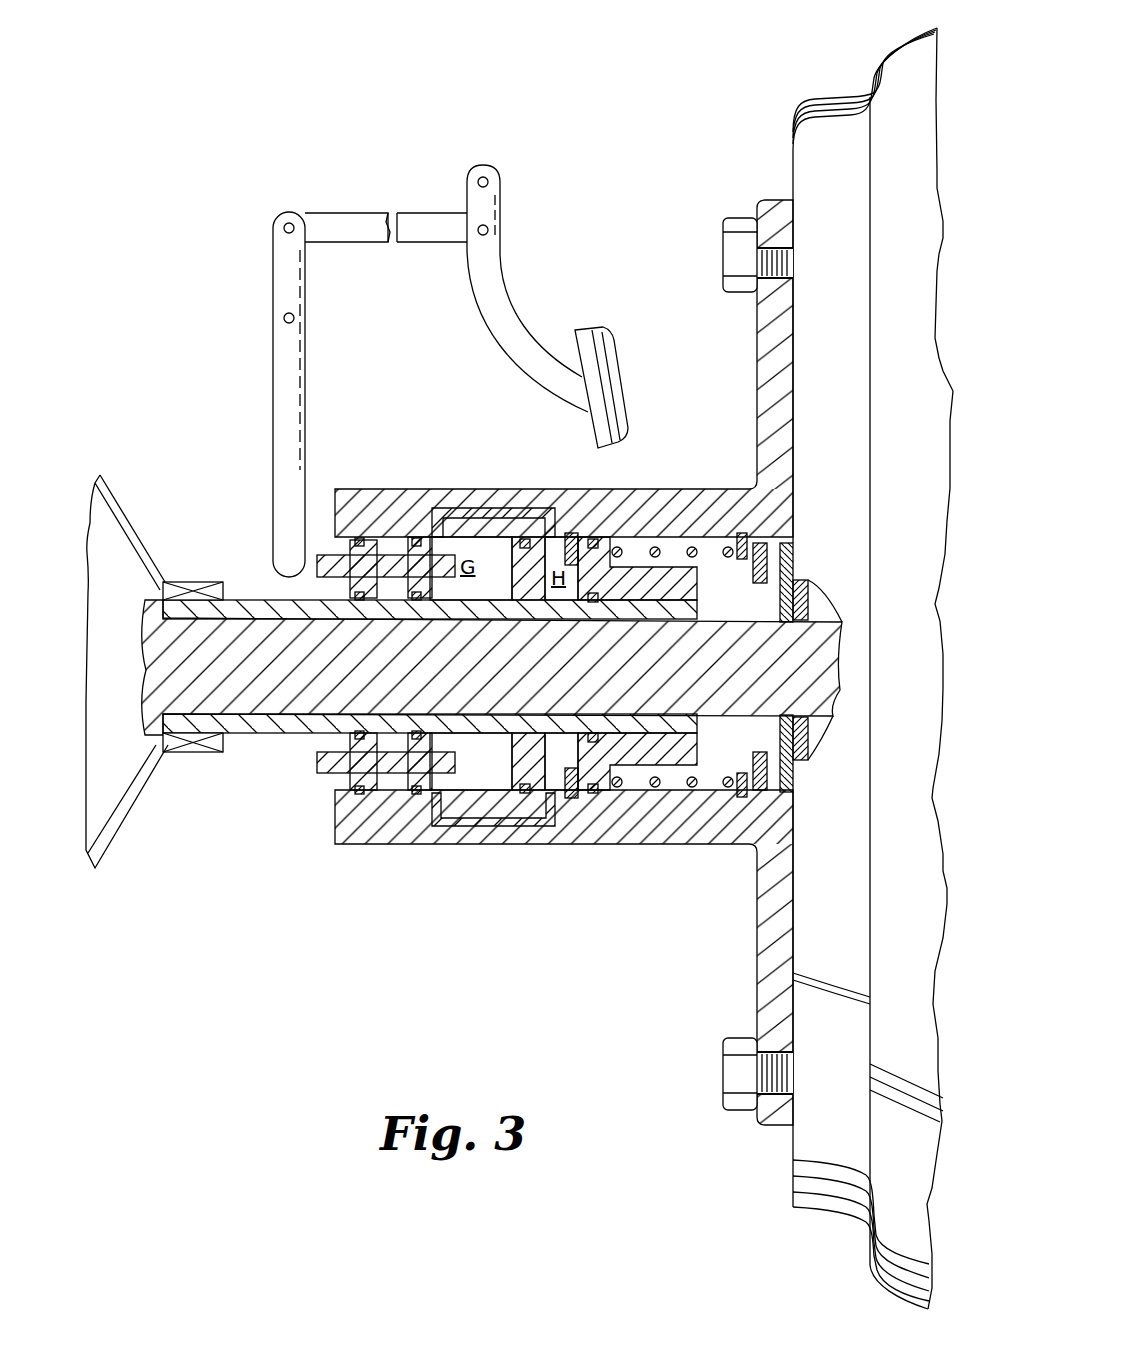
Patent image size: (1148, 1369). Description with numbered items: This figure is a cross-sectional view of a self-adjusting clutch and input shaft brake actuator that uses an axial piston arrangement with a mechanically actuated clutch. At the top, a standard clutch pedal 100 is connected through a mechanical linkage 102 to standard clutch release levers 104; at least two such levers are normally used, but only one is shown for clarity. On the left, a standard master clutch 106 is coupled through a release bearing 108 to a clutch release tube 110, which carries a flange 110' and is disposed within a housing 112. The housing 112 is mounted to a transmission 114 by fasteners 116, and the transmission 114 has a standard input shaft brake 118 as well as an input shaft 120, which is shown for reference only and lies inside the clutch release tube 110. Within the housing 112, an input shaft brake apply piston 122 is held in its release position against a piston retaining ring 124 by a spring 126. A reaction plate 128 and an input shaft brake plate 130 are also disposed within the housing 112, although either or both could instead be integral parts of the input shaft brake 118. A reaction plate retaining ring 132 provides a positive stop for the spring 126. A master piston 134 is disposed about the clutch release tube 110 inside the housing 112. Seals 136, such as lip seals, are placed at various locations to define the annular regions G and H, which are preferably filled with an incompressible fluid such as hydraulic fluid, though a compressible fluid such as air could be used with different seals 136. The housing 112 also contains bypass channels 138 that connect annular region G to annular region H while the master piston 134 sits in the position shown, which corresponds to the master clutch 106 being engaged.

The clutch pedal 100 is at (566, 324).
The mechanical linkage 102 is at (332, 212).
The clutch release levers 104 is at (272, 272).
The master clutch 106 is at (120, 494).
The release bearing 108 is at (193, 762).
The clutch release tube 110 is at (430, 715).
The flange 110' is at (492, 663).
The housing 112 is at (757, 958).
The transmission 114 is at (843, 66).
The fasteners 116 is at (725, 218).
The input shaft brake 118 is at (810, 574).
The input shaft 120 is at (247, 640).
The input shaft brake apply piston 122 is at (630, 767).
The piston retaining ring 124 is at (570, 798).
The spring 126 is at (660, 787).
The reaction plate 128 is at (750, 835).
The input shaft brake plate 130 is at (790, 772).
The reaction plate retaining ring 132 is at (740, 533).
The master piston 134 is at (318, 793).
The seals 136 is at (422, 490).
The bypass channels 138 is at (498, 490).